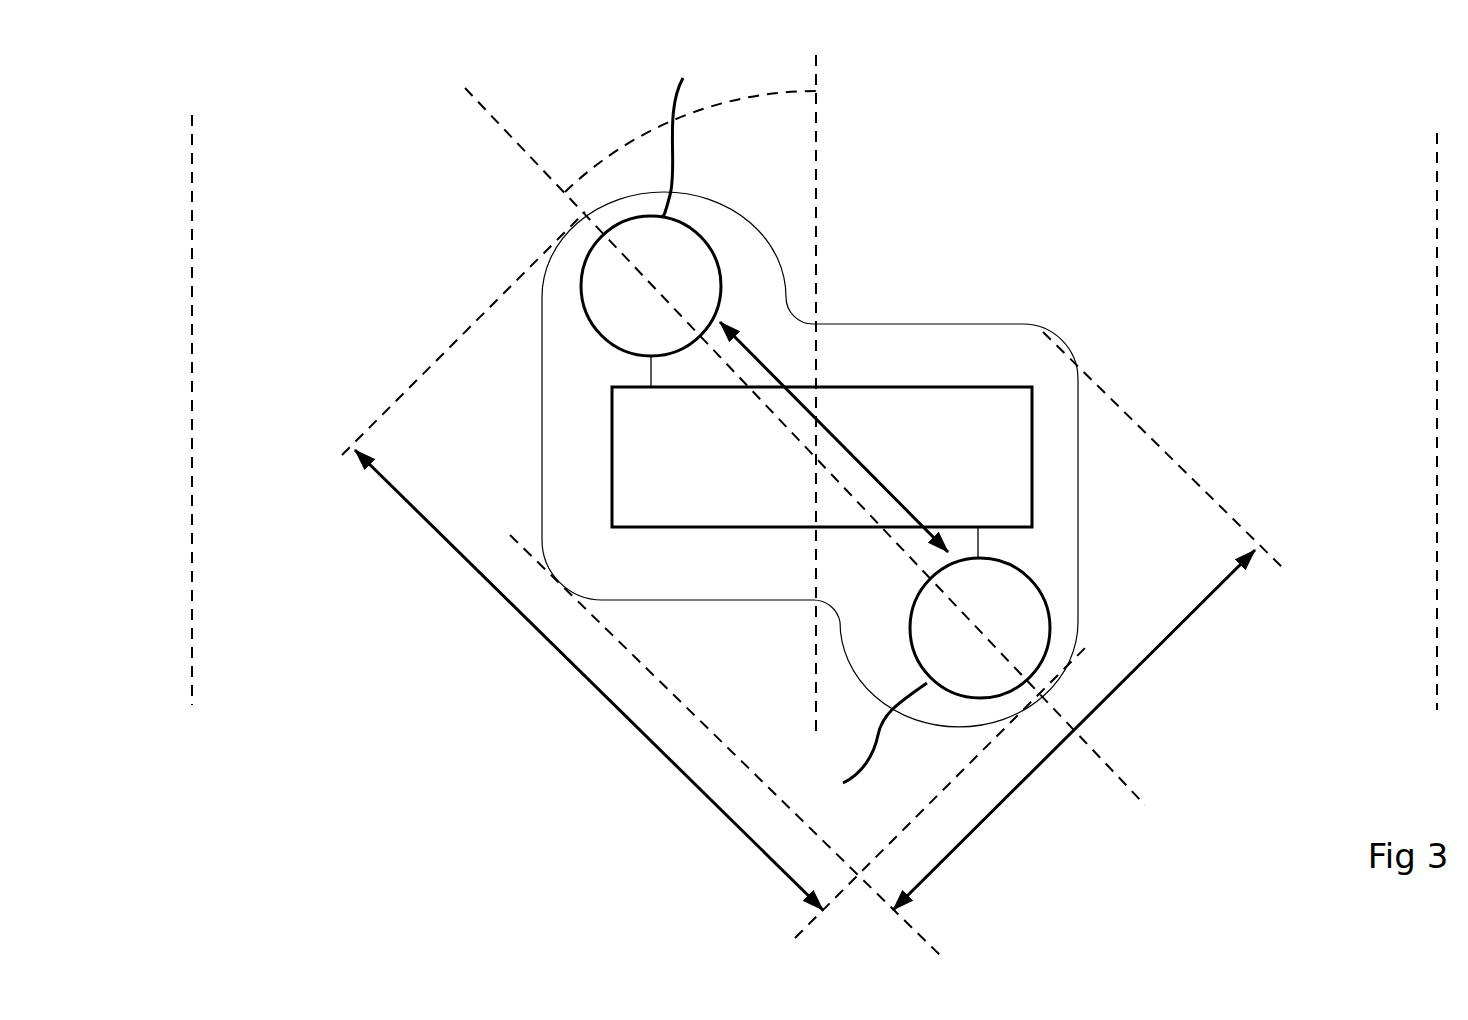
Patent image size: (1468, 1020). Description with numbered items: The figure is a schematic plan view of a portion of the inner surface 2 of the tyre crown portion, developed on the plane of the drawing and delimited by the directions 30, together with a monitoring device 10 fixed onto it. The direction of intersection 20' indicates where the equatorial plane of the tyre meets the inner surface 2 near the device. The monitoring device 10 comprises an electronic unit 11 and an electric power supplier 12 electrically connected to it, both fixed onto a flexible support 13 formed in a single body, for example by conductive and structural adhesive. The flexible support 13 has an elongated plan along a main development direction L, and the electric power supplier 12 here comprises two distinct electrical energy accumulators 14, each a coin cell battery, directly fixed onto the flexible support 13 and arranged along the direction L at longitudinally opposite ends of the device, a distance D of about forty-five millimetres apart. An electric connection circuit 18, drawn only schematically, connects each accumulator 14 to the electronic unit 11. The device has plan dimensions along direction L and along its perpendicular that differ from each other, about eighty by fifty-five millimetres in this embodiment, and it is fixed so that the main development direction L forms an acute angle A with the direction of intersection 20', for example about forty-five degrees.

The inner surface 2 is at (1228, 355).
The monitoring device 10 is at (813, 426).
The electronic unit 11 is at (732, 481).
The electric power supplier 12 is at (588, 271).
The flexible support 13 is at (905, 323).
The electrical energy accumulator 14 is at (794, 426).
The electric connection circuit 18 is at (1014, 547).
The direction of intersection 20' is at (881, 396).
The directions 30 is at (192, 194).